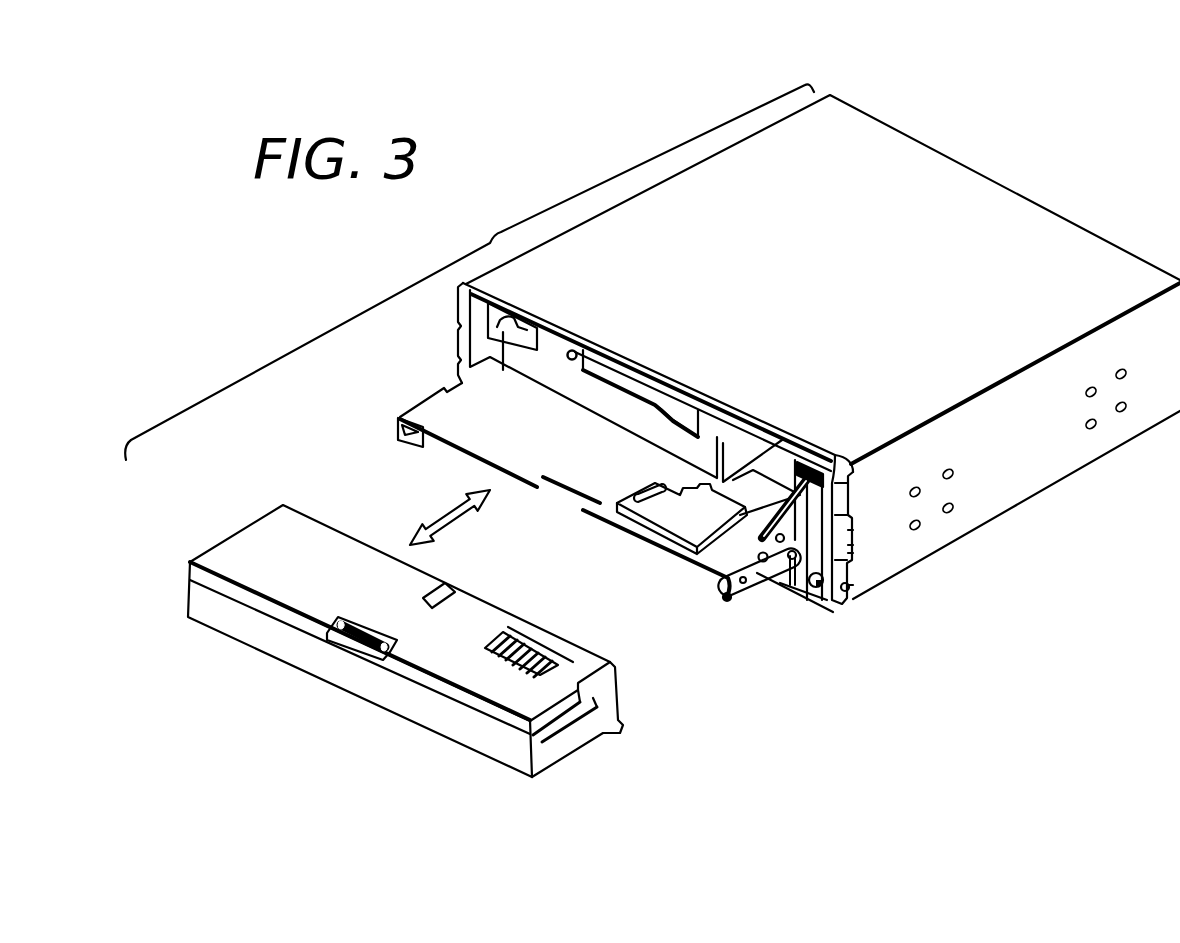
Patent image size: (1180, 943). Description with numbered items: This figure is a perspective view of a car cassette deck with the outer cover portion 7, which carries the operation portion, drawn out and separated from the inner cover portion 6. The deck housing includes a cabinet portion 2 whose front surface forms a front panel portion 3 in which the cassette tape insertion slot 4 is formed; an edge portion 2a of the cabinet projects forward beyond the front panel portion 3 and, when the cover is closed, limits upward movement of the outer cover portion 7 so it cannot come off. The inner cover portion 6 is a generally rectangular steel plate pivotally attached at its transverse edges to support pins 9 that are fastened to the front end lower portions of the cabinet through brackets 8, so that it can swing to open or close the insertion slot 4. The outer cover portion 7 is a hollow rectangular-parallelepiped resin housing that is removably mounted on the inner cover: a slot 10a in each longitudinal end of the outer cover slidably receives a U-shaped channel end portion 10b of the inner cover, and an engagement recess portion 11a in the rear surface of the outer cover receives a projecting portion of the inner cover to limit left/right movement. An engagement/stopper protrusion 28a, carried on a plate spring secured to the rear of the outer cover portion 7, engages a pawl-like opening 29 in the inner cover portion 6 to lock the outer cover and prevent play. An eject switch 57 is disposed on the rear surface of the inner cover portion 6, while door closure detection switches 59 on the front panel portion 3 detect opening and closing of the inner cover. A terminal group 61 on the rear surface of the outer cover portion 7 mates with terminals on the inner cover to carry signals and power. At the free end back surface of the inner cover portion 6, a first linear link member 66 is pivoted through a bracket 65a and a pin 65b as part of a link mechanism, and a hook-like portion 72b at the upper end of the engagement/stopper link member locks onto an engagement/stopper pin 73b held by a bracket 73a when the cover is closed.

The cabinet portion 2 is at (990, 202).
The edge portion 2a is at (758, 423).
The front panel portion 3 is at (717, 427).
The cassette tape insertion slot 4 is at (637, 385).
The inner cover portion 6 is at (757, 577).
The outer cover portion 7 is at (210, 615).
The bracket 8 is at (852, 593).
The support pin 9 is at (832, 595).
The slot 10a is at (573, 723).
The U-shaped channel end portion 10b is at (398, 440).
The engagement recess portion 11a is at (450, 596).
The engagement/stopper protrusion 28a is at (360, 643).
The pawl-like opening 29 is at (552, 482).
The eject switch 57 is at (637, 513).
The door closure detection switch 59 is at (575, 343).
The terminal group 61 is at (537, 637).
The bracket 65a is at (857, 557).
The pin 65b is at (857, 587).
The first linear link member 66 is at (853, 545).
The hook-like portion 72b is at (838, 463).
The bracket 73a is at (760, 552).
The engagement/stopper pin 73b is at (740, 580).